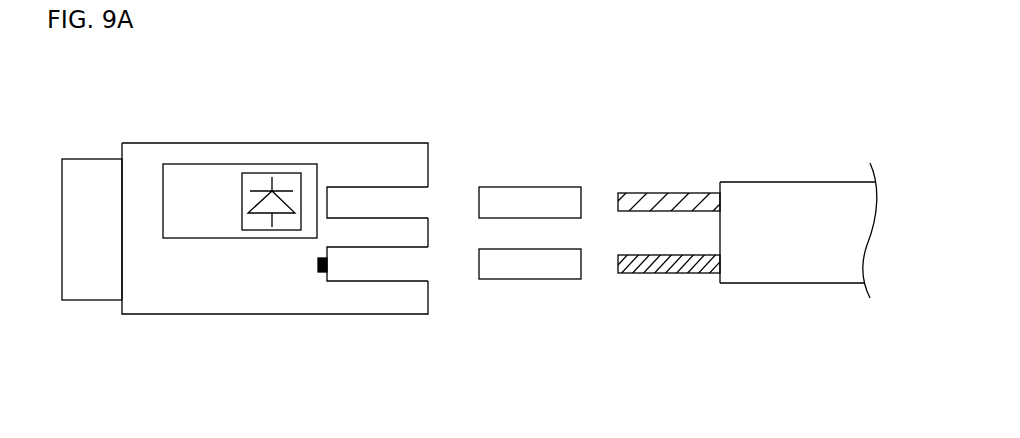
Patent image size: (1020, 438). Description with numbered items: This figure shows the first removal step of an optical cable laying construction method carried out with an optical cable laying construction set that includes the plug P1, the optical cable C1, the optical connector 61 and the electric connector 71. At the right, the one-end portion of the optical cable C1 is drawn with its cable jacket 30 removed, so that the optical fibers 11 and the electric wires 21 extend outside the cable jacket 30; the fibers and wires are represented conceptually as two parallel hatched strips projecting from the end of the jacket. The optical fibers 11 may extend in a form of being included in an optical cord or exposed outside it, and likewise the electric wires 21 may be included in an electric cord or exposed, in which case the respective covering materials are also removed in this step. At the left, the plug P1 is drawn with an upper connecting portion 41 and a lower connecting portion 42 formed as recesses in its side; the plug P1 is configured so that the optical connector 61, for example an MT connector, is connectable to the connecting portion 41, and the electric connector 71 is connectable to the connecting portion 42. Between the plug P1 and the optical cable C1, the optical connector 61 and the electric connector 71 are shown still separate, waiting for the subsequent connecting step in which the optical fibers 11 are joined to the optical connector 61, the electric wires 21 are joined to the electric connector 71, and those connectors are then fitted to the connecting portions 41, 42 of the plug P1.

The plug P1 is at (166, 120).
The optical cable C1 is at (781, 163).
The connecting portion 41 is at (328, 200).
The connecting portion 42 is at (327, 265).
The optical connector 61 is at (525, 187).
The electric connector 71 is at (528, 279).
The optical fibers 11 is at (668, 193).
The electric wires 21 is at (671, 273).
The cable jacket 30 is at (788, 283).